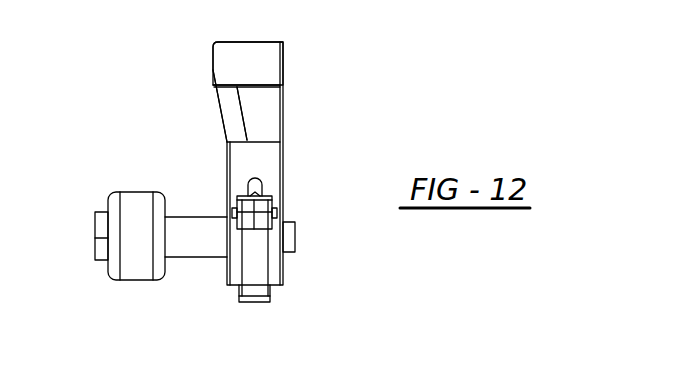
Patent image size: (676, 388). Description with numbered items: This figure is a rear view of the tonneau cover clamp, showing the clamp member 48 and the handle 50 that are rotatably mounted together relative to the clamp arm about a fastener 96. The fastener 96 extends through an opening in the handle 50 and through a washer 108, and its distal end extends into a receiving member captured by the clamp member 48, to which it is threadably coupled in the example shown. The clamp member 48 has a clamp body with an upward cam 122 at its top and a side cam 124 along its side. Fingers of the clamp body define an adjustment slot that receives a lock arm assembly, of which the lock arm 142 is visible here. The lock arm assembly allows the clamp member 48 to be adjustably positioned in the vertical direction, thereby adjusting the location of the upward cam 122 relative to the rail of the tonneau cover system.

The clamp member 48 is at (268, 110).
The upward cam 122 is at (265, 52).
The side cam 124 is at (212, 72).
The lock arm 142 is at (262, 268).
The washer 108 is at (186, 238).
The handle 50 is at (135, 270).
The fastener 96 is at (103, 222).